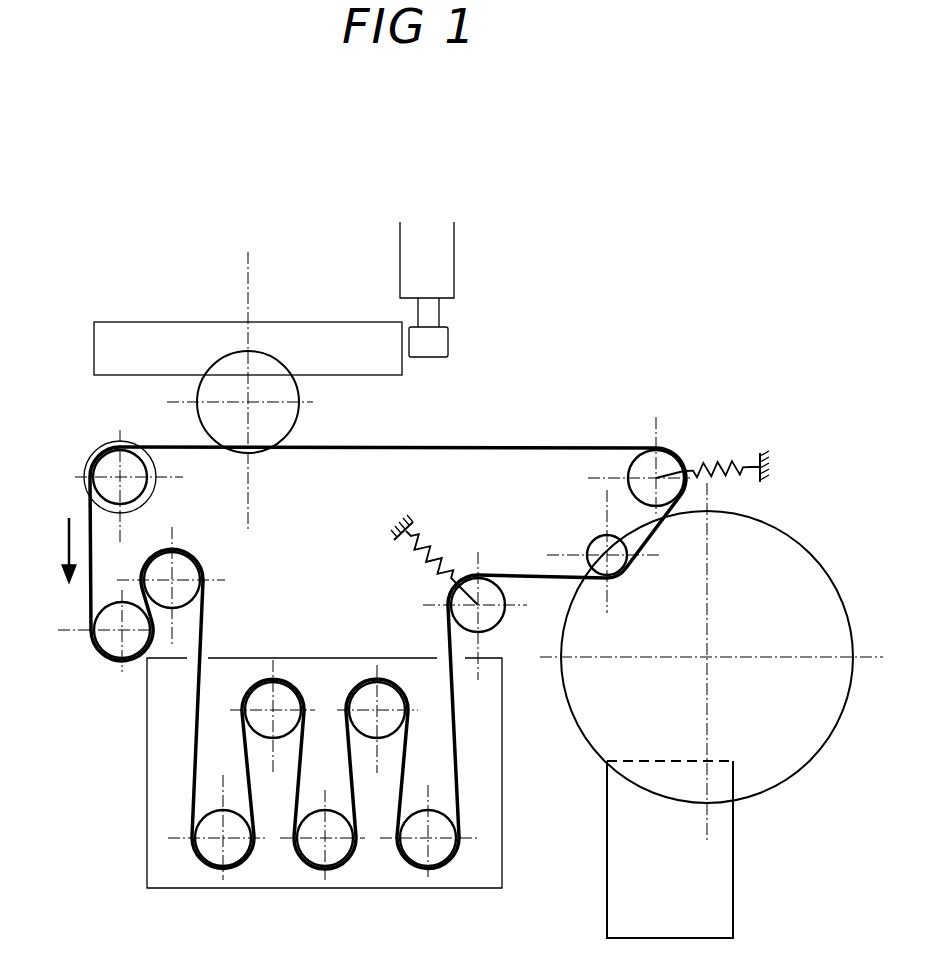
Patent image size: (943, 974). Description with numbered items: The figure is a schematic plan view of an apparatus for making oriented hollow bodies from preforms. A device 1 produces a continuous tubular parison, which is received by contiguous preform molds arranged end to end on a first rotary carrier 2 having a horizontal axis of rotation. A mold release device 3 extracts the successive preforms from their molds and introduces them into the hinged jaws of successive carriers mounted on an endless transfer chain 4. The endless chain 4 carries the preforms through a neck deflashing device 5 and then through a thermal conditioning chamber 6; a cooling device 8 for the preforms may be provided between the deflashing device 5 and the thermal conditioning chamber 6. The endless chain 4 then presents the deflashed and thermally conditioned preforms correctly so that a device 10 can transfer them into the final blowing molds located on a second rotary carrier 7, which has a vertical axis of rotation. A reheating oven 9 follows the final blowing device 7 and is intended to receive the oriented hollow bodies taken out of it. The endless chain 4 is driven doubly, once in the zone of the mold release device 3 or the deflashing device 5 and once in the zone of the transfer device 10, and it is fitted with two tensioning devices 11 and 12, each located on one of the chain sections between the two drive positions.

The device for the production of a continuous tubular parison 1 is at (423, 343).
The first rotary carrier 2 is at (137, 350).
The mold release device 3 is at (218, 405).
The endless transfer chain 4 is at (438, 448).
The neck deflashing device 5 is at (90, 455).
The thermal conditioning chamber 6 is at (168, 838).
The second rotary carrier 7 is at (770, 602).
The cooling device 8 is at (122, 630).
The reheating oven 9 is at (682, 873).
The device for transferring the preforms into the final blowing molds 10 is at (603, 553).
The tensioning device 11 is at (470, 612).
The tensioning device 12 is at (652, 468).